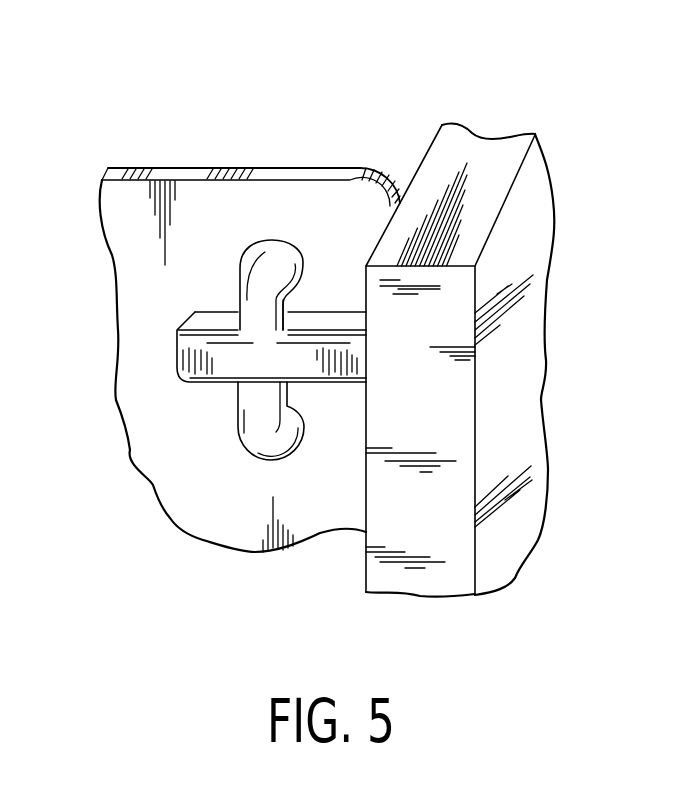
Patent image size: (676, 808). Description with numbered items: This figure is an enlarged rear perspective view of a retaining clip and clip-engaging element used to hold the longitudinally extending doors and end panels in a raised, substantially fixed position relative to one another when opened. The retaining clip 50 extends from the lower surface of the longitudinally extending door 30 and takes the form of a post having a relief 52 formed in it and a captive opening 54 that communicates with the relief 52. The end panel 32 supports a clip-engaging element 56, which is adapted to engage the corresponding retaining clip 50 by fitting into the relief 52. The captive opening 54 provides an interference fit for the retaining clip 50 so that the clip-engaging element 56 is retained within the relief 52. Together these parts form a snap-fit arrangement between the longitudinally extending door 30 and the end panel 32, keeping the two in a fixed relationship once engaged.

The longitudinally extending door 30 is at (480, 160).
The end panel 32 is at (205, 197).
The retaining clip 50 is at (175, 365).
The relief 52 is at (242, 322).
The captive opening 54 is at (288, 310).
The clip-engaging element 56 is at (277, 250).